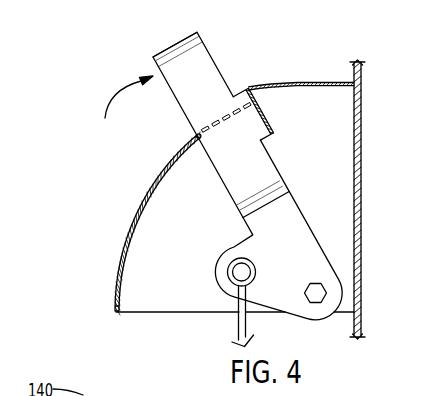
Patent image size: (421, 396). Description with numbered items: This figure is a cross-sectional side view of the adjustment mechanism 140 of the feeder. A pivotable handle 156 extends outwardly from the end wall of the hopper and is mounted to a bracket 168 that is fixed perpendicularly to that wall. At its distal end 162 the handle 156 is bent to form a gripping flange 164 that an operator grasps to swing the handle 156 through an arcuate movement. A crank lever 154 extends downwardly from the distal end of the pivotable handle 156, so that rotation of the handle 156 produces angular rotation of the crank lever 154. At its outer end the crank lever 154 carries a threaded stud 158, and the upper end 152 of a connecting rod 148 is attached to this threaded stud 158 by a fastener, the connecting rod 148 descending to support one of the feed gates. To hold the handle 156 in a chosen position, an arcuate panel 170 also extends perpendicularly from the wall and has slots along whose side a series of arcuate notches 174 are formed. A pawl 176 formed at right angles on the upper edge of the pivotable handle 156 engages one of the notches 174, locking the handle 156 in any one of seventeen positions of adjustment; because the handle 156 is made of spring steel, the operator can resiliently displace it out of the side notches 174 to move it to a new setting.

The adjustment mechanism 140 is at (97, 57).
The connecting rod 148 is at (238, 323).
The upper end of the connecting rod 152 is at (250, 327).
The crank lever 154 is at (223, 268).
The pivotable handle 156 is at (205, 77).
The threaded stud 158 is at (240, 259).
The distal end of the handle 162 is at (120, 112).
The gripping flange 164 is at (169, 47).
The bracket 168 is at (335, 142).
The arcuate panel 170 is at (148, 194).
The arcuate notches 174 is at (222, 123).
The pawl 176 is at (255, 92).